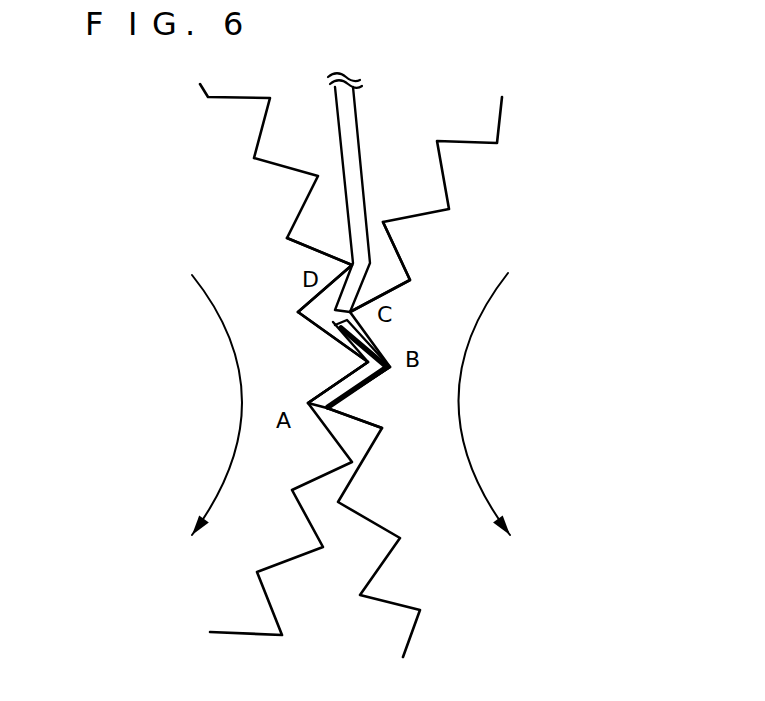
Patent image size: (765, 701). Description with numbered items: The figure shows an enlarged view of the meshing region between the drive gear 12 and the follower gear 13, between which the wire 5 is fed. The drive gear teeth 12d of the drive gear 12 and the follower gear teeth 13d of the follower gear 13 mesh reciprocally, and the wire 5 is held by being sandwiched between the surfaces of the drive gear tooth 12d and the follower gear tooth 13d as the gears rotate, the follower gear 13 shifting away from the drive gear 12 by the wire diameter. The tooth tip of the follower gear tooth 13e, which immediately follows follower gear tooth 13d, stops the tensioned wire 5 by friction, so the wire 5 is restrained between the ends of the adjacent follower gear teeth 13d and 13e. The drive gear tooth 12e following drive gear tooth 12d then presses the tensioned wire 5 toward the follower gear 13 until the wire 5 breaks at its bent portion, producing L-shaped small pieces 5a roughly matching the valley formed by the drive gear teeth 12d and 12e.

The wire 5 is at (358, 116).
The small piece 5a is at (358, 346).
The drive gear 12 is at (603, 401).
The drive gear tooth 12d is at (358, 397).
The drive gear tooth 12e is at (390, 298).
The follower gear 13 is at (153, 401).
The follower gear tooth 13d is at (357, 363).
The follower gear tooth 13e is at (352, 265).